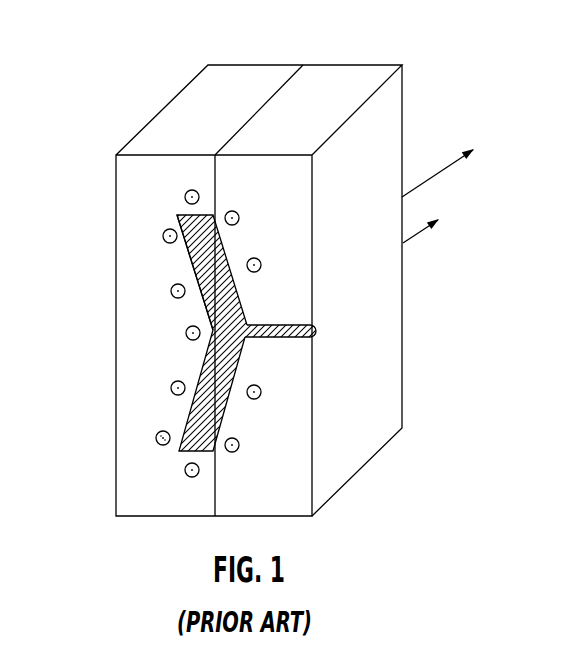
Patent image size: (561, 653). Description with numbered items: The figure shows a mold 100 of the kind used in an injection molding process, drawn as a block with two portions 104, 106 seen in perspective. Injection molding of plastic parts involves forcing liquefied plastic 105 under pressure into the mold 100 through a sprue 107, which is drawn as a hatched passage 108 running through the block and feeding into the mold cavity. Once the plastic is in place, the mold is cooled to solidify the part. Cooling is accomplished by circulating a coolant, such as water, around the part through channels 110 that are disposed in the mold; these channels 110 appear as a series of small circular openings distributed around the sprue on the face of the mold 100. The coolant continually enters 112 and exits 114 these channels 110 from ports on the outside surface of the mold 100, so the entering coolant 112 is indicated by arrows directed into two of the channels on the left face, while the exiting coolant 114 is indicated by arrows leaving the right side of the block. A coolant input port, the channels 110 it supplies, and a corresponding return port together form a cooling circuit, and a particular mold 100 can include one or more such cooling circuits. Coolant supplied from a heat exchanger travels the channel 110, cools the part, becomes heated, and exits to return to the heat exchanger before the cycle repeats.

The mold 100 is at (80, 161).
The first block 104 is at (182, 115).
The liquefied plastic 105 is at (191, 266).
The second block 106 is at (355, 77).
The sprue 107 is at (272, 338).
The mixing insert 108 is at (243, 300).
The channels 110 is at (239, 214).
The coolant entering 112 is at (168, 394).
The coolant exiting 114 is at (428, 180).